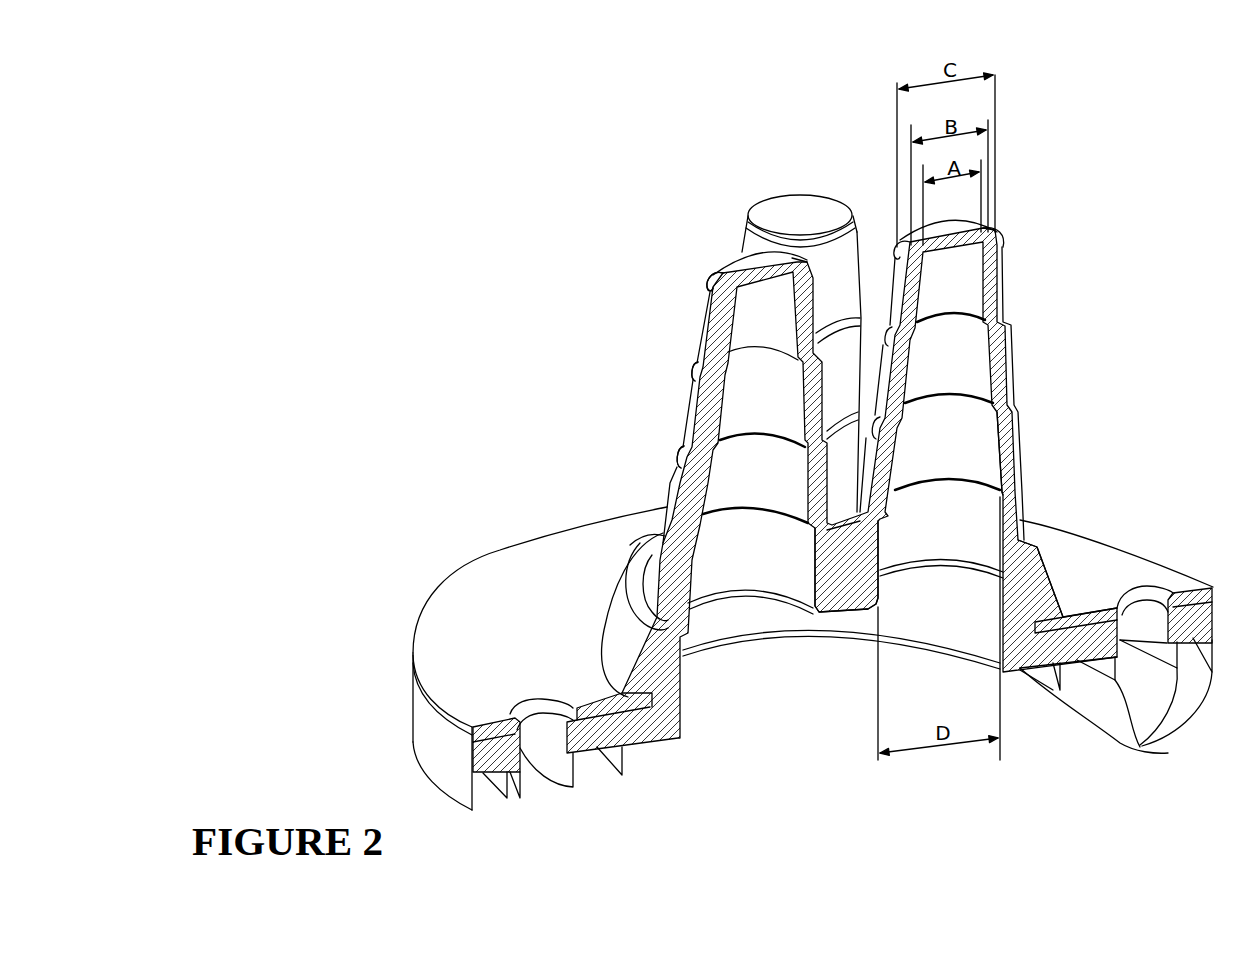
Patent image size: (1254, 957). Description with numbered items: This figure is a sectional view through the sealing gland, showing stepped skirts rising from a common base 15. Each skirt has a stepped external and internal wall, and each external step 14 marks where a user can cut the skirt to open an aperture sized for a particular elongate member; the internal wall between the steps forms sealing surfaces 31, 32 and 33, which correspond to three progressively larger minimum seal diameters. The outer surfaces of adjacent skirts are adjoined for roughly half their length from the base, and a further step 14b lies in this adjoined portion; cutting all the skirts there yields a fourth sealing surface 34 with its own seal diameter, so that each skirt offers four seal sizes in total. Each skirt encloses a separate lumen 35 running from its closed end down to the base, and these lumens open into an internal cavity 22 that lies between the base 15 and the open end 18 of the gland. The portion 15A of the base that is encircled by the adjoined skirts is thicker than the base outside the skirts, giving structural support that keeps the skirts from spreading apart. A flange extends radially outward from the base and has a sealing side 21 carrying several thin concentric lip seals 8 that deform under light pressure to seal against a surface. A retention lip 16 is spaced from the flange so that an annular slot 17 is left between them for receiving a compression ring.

The lip seals 8 is at (1116, 716).
The step 14 is at (710, 288).
The step 14b is at (1020, 490).
The base 15 is at (650, 568).
The portion of the base 15A is at (820, 590).
The retention lip 16 is at (1050, 600).
The annular slot 17 is at (1050, 627).
The open end 18 is at (655, 728).
The sealing side 21 is at (540, 784).
The internal cavity 22 is at (712, 627).
The sealing surface 31 is at (963, 290).
The sealing surface 32 is at (970, 375).
The sealing surface 33 is at (975, 455).
The sealing surface 34 is at (952, 540).
The lumen 35 is at (750, 462).